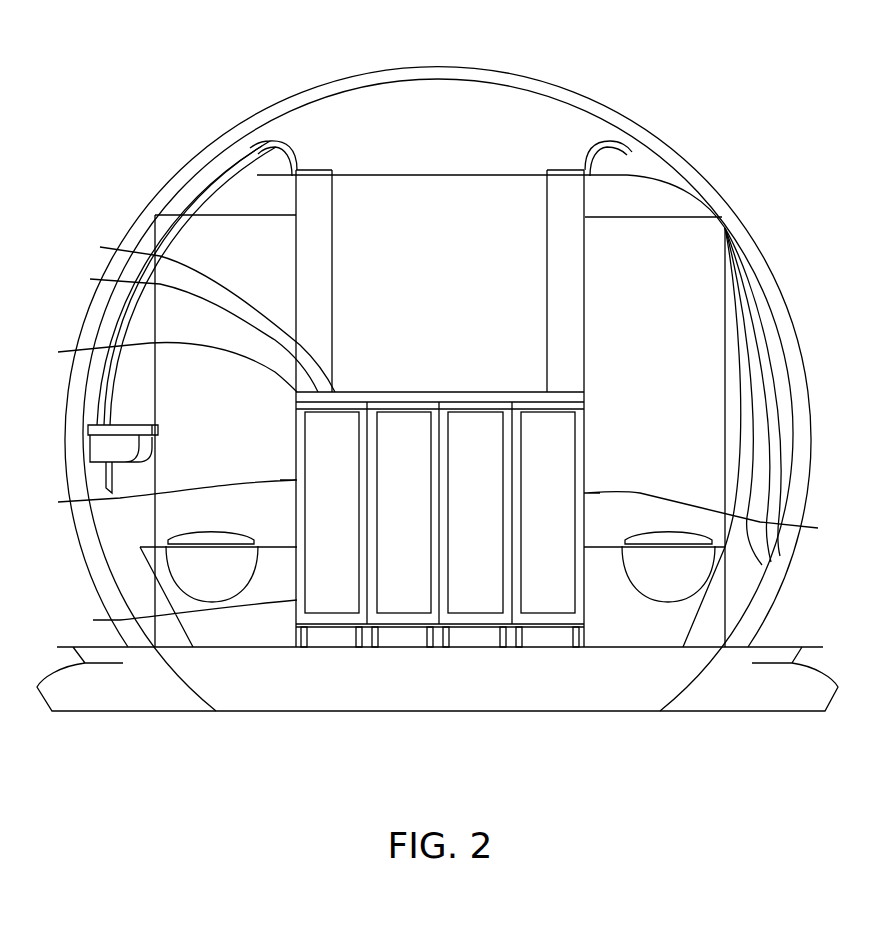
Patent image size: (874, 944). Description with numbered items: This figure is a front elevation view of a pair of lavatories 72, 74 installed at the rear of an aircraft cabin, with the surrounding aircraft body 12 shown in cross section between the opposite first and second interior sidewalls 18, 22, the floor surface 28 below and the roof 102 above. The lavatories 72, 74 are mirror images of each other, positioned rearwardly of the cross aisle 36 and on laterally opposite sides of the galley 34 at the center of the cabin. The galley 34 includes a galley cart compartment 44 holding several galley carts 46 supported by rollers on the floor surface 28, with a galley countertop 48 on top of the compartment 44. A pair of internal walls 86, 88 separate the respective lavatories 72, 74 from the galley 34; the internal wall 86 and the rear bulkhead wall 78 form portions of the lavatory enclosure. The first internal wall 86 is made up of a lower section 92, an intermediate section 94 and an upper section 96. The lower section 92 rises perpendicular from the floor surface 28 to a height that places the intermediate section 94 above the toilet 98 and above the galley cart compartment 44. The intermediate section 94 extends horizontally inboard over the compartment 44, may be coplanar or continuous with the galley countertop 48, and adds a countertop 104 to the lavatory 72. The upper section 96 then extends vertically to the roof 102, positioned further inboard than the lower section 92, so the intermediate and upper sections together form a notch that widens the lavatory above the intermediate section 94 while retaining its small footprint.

The aircraft fuselage or body 12 is at (696, 157).
The roof 102 is at (326, 106).
The first interior sidewall 18 is at (103, 336).
The second interior sidewall 22 is at (773, 375).
The floor surface 28 is at (396, 642).
The galley 34 is at (498, 290).
The cross aisle 36 is at (274, 632).
The galley cart compartment 44 is at (568, 648).
The galley carts 46 is at (338, 628).
The galley countertop 48 is at (408, 392).
The first lavatory 72 is at (190, 250).
The second lavatory 74 is at (691, 267).
The rear bulkhead wall 78 is at (219, 221).
The first internal wall 86 is at (161, 498).
The second internal wall 88 is at (717, 518).
The lower section 92 is at (178, 597).
The intermediate section 94 is at (161, 365).
The upper section 96 is at (202, 311).
The toilet 98 is at (226, 536).
The countertop 104 is at (180, 329).